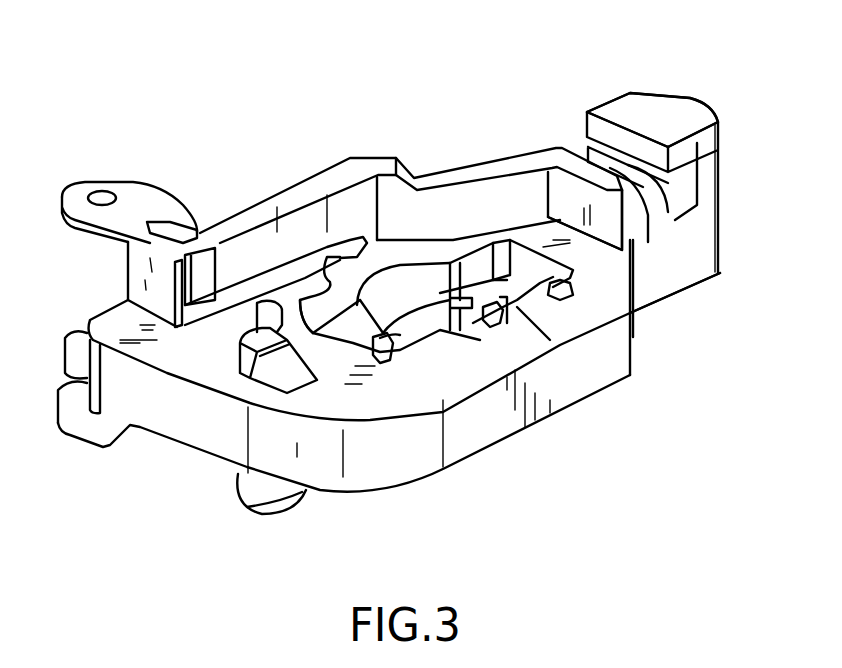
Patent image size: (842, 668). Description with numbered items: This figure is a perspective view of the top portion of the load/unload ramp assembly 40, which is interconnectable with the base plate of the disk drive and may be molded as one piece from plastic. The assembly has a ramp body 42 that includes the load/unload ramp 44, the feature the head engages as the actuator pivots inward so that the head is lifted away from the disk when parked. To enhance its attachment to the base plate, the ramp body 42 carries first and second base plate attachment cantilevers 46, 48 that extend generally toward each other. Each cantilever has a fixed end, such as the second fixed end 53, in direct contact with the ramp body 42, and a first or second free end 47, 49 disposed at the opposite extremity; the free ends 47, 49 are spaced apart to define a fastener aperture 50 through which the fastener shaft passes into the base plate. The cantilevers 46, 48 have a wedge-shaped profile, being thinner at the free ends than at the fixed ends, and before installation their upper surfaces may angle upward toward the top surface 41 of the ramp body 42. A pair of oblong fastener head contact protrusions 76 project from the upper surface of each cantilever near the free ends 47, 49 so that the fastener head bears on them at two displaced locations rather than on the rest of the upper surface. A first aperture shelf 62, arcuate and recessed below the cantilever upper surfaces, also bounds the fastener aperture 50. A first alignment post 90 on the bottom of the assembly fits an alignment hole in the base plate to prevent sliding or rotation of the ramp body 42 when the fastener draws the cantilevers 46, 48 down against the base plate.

The load/unload ramp assembly 40 is at (539, 102).
The top surface 41 is at (617, 273).
The ramp body 42 is at (597, 310).
The load/unload ramp 44 is at (653, 158).
The first base plate attachment cantilever 46 is at (380, 362).
The first free end 47 is at (390, 353).
The second base plate attachment cantilever 48 is at (520, 287).
The second free end 49 is at (457, 323).
The fastener aperture 50 is at (467, 317).
The second fixed end 53 is at (530, 290).
The first aperture shelf 62 is at (383, 320).
The fastener head contact protrusion 76 is at (515, 320).
The first alignment post 90 is at (293, 503).